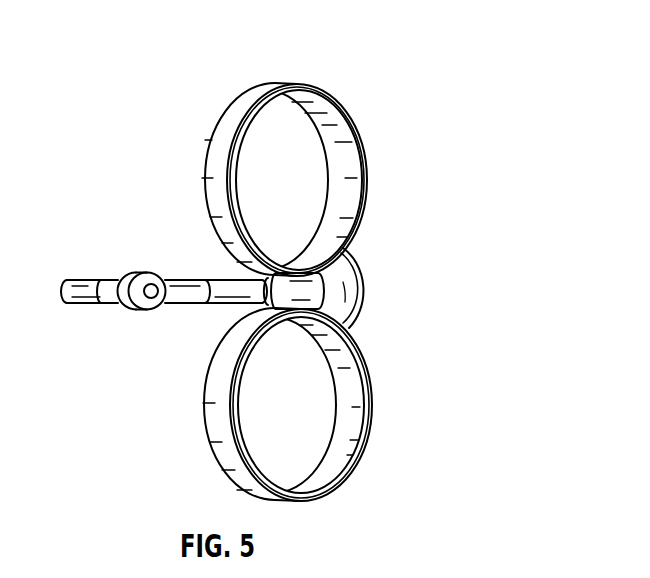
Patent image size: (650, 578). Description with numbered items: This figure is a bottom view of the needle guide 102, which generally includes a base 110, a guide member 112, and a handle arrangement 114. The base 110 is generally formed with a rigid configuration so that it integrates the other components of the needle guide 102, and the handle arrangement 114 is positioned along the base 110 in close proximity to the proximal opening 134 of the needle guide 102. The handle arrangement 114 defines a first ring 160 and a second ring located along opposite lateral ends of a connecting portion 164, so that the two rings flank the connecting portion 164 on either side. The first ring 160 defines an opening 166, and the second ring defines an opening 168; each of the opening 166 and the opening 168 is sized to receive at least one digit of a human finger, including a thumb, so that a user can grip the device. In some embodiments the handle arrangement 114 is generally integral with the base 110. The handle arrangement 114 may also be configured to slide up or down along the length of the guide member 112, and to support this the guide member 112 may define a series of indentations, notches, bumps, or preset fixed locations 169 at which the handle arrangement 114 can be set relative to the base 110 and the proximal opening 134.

The needle guide 102 is at (170, 47).
The base 110 is at (369, 327).
The guide member 112 is at (172, 288).
The handle arrangement 114 is at (406, 201).
The proximal opening 134 is at (371, 264).
The first ring 160 is at (219, 132).
The connecting portion 164 is at (352, 250).
The opening 166 is at (290, 180).
The opening 168 is at (338, 443).
The preset fixed locations 169 is at (209, 267).